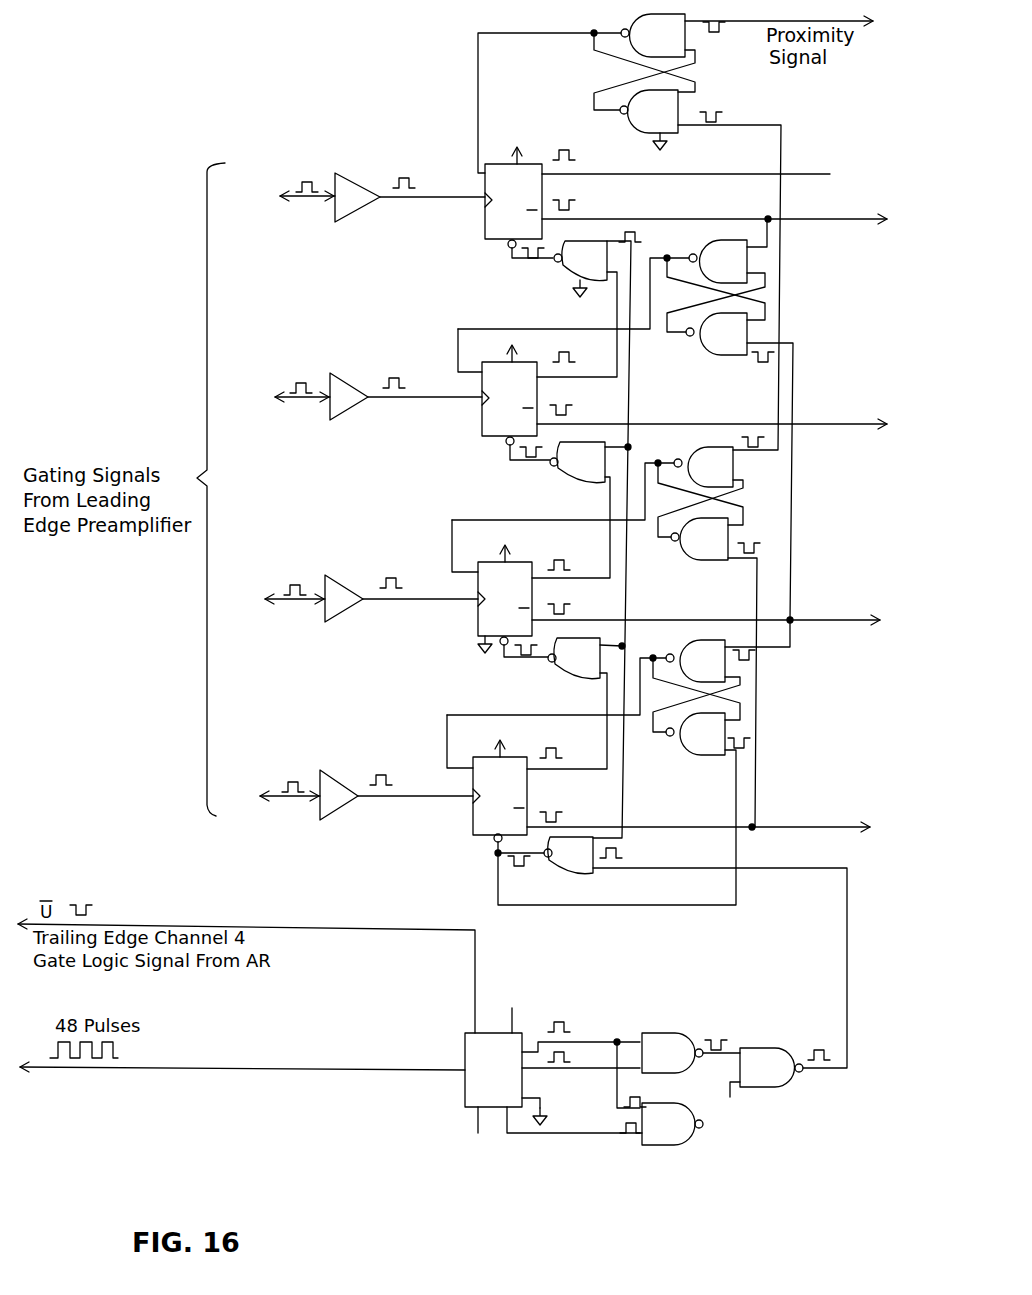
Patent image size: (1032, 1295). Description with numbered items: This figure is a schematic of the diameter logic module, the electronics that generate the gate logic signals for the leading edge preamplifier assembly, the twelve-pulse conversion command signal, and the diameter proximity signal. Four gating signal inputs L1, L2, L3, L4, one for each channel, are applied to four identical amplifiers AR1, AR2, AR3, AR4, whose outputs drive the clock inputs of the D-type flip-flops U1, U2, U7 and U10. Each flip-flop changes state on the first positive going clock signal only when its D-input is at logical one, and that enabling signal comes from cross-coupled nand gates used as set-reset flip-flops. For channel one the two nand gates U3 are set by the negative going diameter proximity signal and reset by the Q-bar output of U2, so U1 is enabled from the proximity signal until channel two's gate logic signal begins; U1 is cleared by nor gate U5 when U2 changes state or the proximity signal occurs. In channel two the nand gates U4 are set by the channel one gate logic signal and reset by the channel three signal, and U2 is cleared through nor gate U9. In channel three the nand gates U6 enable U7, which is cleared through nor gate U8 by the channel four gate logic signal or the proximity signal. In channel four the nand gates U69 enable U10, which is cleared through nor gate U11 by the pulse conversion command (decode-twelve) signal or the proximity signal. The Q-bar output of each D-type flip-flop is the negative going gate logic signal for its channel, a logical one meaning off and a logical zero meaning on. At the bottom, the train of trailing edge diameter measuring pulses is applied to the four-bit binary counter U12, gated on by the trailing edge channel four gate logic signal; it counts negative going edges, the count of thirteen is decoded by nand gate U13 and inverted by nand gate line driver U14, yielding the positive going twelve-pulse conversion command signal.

The channel 1 D-type flip-flop U1 is at (485, 220).
The channel 2 D-type flip-flop U2 is at (482, 424).
The channel 1 set-reset flip-flop nand gates U3 is at (680, 44).
The channel 2 set-reset flip-flop nand gates U4 is at (697, 322).
The nor gate U5 is at (589, 535).
The channel 3 set-reset flip-flop nand gates U6 is at (688, 530).
The channel 3 D-type flip-flop U7 is at (478, 620).
The nor gate U8 is at (576, 703).
The nor gate U9 is at (581, 510).
The channel 4 D-type flip-flop U10 is at (473, 818).
The nor gate U11 is at (562, 873).
The 4-bit binary counter U12 is at (470, 1048).
The nand gate U13 is at (657, 1108).
The nand gate line driver U14 is at (766, 1053).
The latch gates U69 is at (683, 728).
The amplifier AR1 is at (410, 197).
The amplifier AR2 is at (406, 396).
The amplifier AR3 is at (401, 598).
The amplifier AR4 is at (396, 795).
The gating signal line 1 L1 is at (286, 194).
The gating signal line 2 L2 is at (286, 396).
The gating signal line 3 L3 is at (276, 597).
The gating signal line 4 L4 is at (270, 795).